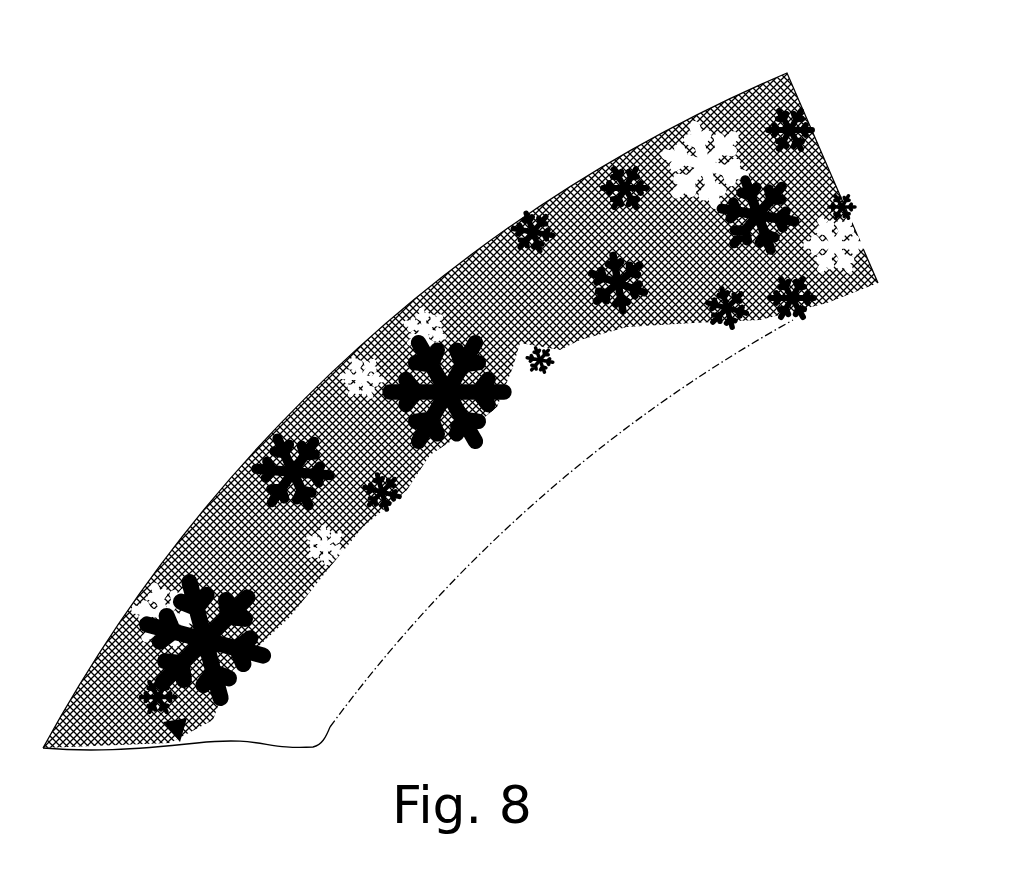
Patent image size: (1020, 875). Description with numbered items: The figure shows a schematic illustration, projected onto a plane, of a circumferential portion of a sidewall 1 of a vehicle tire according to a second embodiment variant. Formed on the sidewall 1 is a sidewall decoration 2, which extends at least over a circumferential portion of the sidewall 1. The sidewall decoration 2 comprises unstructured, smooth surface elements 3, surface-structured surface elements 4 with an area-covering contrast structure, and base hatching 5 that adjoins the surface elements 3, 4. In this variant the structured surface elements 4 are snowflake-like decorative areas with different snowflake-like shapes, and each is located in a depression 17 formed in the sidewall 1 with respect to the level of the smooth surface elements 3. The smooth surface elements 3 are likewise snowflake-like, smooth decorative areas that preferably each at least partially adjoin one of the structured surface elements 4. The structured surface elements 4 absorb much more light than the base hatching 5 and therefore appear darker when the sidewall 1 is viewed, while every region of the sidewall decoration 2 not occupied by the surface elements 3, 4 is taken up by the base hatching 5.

The sidewall 1 is at (660, 98).
The sidewall decoration 2 is at (222, 540).
The smooth surface element 3 is at (517, 343).
The surface-structured surface element 4 is at (490, 413).
The base hatching 5 is at (478, 268).
The depression 17 is at (457, 427).